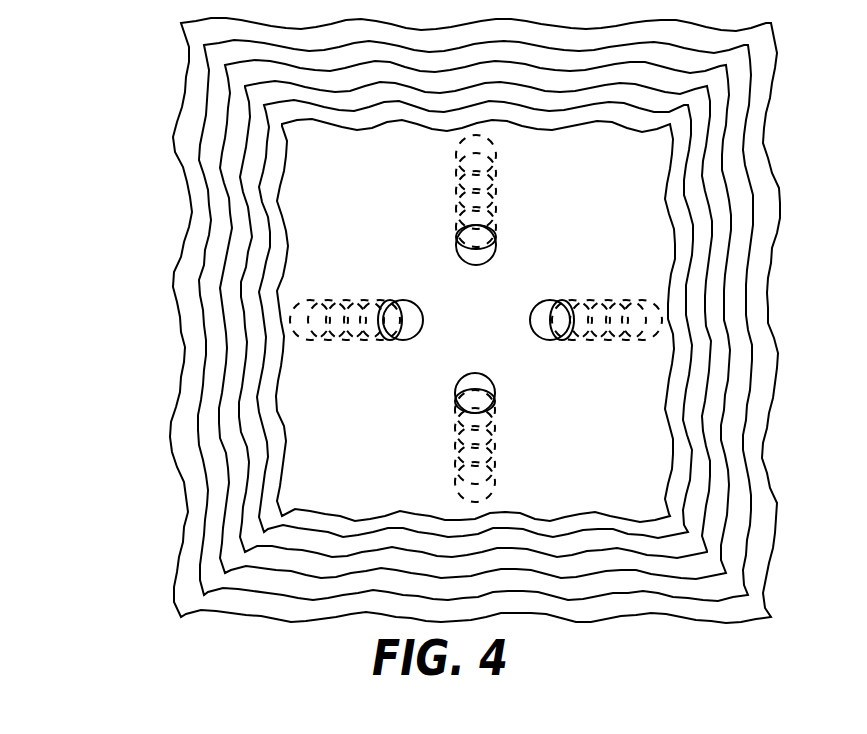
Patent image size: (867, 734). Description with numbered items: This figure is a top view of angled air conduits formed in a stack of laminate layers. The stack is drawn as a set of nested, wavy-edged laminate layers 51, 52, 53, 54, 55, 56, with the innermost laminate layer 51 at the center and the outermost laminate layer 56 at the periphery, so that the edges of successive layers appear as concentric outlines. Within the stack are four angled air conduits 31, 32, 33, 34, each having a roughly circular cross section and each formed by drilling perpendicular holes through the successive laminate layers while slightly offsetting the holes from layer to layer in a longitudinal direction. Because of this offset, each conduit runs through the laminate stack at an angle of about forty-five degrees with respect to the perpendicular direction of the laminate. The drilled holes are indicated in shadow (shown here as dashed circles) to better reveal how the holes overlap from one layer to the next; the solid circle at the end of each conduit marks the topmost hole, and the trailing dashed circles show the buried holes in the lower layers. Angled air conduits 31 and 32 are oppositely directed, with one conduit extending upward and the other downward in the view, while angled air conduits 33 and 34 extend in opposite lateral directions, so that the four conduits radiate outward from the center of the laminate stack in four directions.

The angled air conduit 31 is at (478, 383).
The angled air conduit 32 is at (478, 255).
The angled air conduit 33 is at (408, 322).
The angled air conduit 34 is at (542, 312).
The laminate layer 51 is at (293, 402).
The laminate layer 52 is at (272, 368).
The laminate layer 53 is at (255, 328).
The laminate layer 54 is at (237, 292).
The laminate layer 55 is at (215, 255).
The laminate layer 56 is at (192, 218).